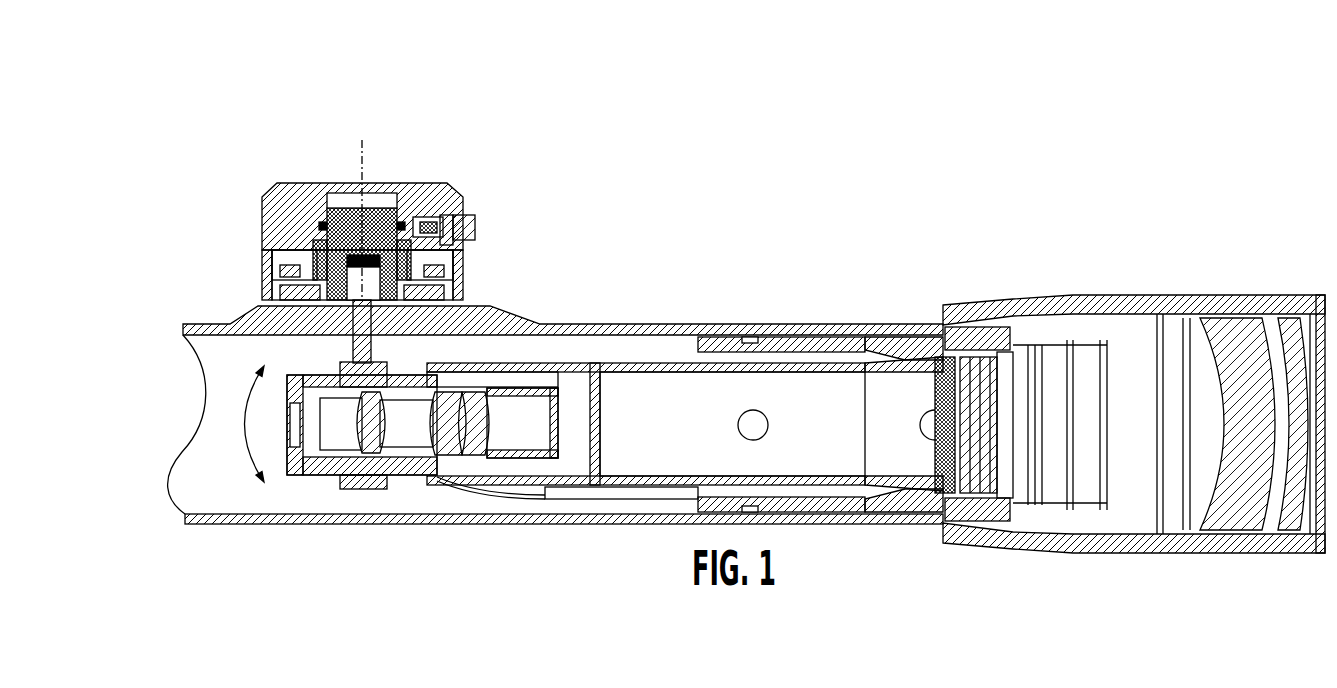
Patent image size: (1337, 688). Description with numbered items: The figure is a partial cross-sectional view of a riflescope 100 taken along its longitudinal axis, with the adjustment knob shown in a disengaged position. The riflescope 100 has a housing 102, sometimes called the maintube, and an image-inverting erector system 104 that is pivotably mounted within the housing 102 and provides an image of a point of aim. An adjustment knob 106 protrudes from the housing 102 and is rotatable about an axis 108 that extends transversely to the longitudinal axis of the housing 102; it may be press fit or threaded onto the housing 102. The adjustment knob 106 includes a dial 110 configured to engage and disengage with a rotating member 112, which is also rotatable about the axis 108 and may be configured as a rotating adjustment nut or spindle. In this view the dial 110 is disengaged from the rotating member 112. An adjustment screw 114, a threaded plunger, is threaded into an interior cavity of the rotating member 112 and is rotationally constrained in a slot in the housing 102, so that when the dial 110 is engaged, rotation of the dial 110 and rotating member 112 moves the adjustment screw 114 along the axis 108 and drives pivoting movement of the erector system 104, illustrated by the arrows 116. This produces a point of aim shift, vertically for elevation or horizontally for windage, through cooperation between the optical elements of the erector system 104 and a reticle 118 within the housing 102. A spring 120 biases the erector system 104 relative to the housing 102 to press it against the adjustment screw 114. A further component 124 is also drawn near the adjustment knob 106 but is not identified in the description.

The riflescope 100 is at (100, 122).
The housing 102 is at (787, 324).
The erector system 104 is at (580, 358).
The adjustment knob 106 is at (229, 180).
The axis 108 is at (366, 158).
The dial 110 is at (445, 183).
The rotating member 112 is at (336, 196).
The adjustment screw 114 is at (350, 340).
The arrows 116 is at (243, 428).
The reticle 118 is at (940, 420).
The spring 120 is at (568, 500).
The set screw 124 is at (478, 228).